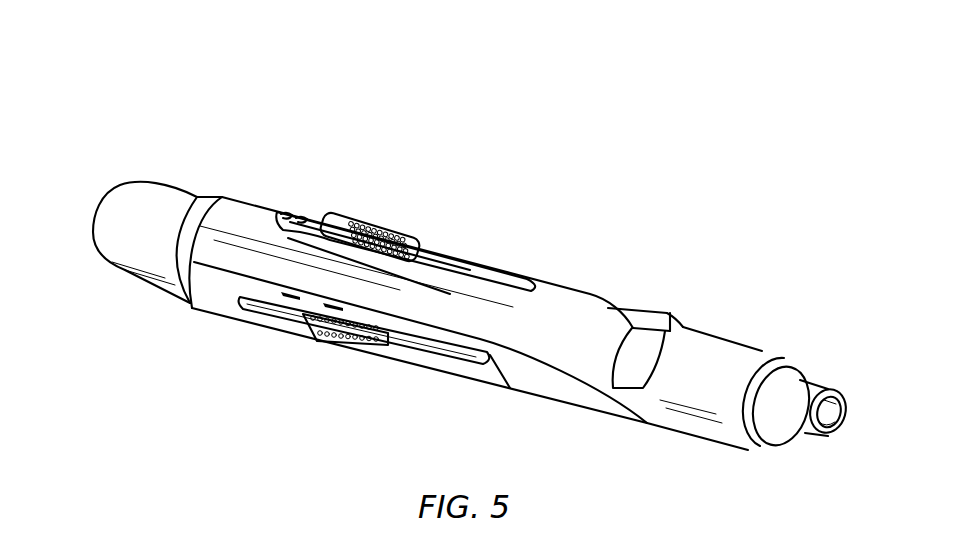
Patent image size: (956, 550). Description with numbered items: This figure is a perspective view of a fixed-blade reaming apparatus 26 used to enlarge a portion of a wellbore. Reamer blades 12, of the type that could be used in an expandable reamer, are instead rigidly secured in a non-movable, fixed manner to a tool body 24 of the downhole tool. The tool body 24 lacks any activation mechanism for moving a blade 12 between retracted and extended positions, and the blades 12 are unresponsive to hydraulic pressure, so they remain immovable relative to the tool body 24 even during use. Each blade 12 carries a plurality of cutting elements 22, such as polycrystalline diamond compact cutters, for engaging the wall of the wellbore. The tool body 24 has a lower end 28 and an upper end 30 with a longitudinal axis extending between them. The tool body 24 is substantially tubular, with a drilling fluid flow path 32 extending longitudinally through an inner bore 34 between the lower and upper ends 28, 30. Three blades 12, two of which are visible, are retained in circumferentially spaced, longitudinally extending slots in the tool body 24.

The reamer blade 12 is at (380, 230).
The cutting elements 22 is at (398, 238).
The tool body 24 is at (590, 320).
The fixed-blade reaming apparatus 26 is at (247, 134).
The lower end 28 is at (847, 391).
The upper end 30 is at (93, 203).
The drilling fluid flow path 32 is at (848, 427).
The inner bore 34 is at (830, 437).